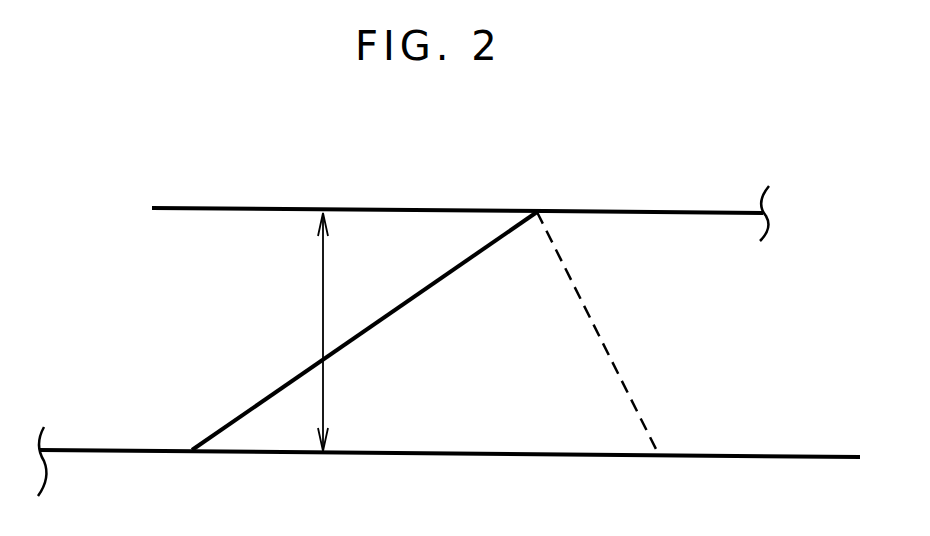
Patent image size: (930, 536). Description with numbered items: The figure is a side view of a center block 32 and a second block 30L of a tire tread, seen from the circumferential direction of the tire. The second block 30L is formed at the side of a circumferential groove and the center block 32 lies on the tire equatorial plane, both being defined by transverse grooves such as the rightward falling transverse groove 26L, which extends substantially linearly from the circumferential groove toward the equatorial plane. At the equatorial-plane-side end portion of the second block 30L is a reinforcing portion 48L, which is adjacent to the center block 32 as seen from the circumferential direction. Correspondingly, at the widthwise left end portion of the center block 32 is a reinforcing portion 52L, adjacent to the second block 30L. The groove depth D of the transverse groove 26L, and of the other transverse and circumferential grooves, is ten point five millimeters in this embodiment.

The second block 30L is at (270, 206).
The center block 32 is at (692, 211).
The rightward falling transverse groove 26L is at (248, 447).
The reinforcing portion 52L is at (414, 297).
The reinforcing portion 48L is at (578, 290).
The groove depth D is at (321, 302).